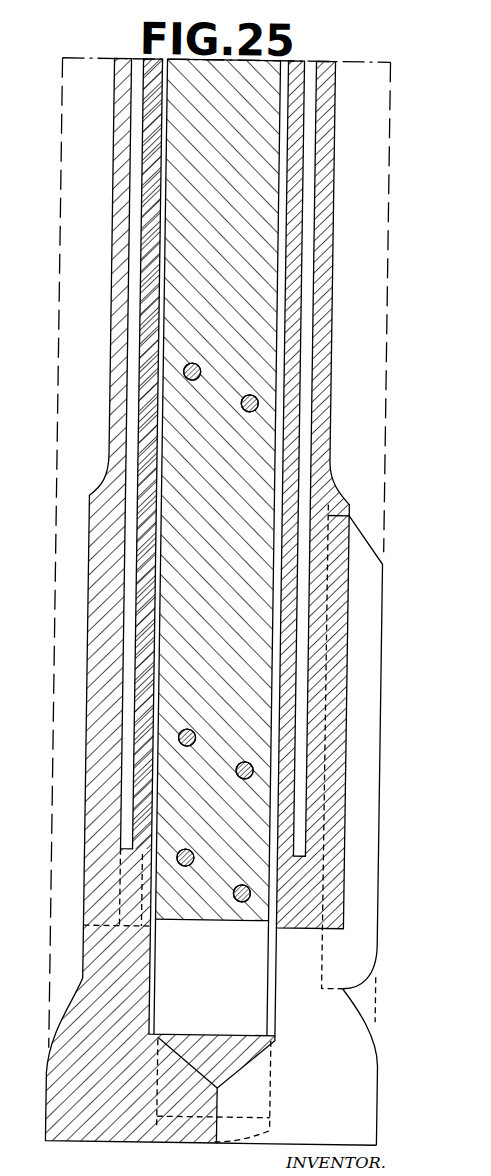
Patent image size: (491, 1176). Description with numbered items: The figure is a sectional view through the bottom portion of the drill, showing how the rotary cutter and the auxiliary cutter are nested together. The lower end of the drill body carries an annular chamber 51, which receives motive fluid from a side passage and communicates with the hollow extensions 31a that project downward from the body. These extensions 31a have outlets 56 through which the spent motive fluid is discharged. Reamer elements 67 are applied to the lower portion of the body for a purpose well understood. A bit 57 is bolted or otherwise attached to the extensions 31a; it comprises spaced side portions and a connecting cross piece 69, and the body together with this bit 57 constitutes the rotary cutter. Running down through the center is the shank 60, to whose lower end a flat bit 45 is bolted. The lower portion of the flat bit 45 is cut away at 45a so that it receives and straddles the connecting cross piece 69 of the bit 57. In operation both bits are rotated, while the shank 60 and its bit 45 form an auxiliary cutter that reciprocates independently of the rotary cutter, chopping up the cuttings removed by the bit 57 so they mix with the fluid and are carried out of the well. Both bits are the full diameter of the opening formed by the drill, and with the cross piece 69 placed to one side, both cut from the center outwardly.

The extensions 31a is at (300, 60).
The annular chamber 51 is at (129, 379).
The shank 60 is at (259, 318).
The reamer elements 67 is at (384, 586).
The outlets 56 is at (114, 943).
The cut-away portion 45a is at (178, 967).
The connecting cross piece 69 is at (249, 1040).
The flat bit 45 is at (244, 1095).
The bit 57 is at (384, 1079).